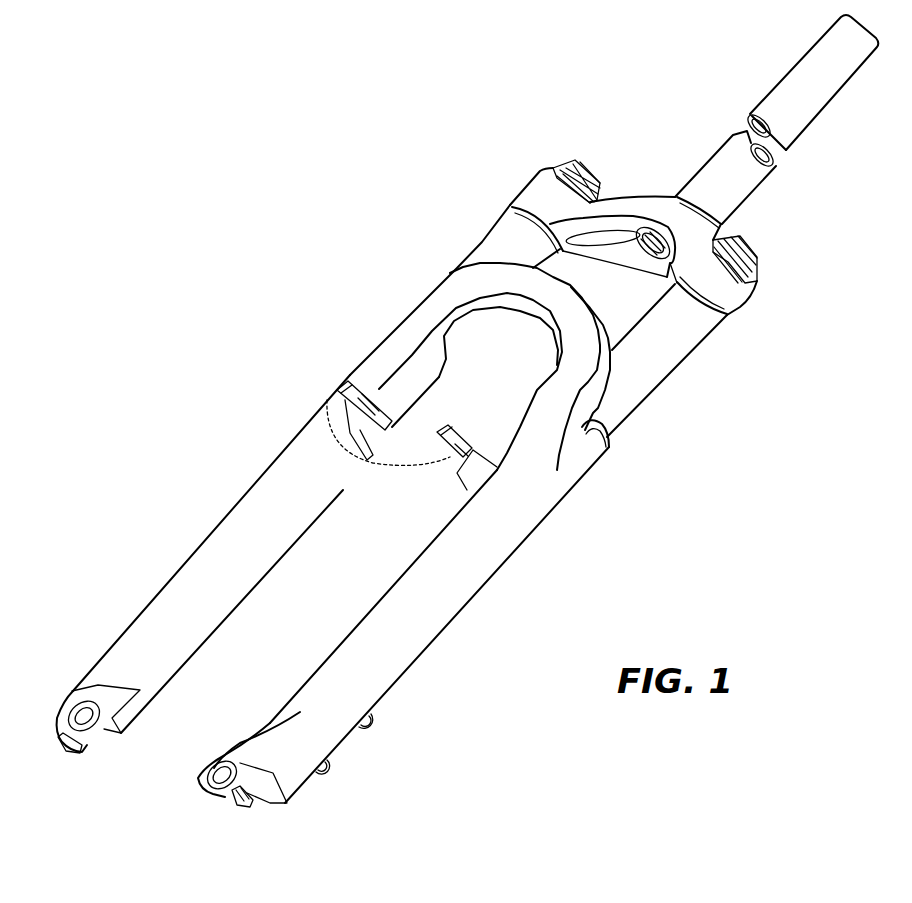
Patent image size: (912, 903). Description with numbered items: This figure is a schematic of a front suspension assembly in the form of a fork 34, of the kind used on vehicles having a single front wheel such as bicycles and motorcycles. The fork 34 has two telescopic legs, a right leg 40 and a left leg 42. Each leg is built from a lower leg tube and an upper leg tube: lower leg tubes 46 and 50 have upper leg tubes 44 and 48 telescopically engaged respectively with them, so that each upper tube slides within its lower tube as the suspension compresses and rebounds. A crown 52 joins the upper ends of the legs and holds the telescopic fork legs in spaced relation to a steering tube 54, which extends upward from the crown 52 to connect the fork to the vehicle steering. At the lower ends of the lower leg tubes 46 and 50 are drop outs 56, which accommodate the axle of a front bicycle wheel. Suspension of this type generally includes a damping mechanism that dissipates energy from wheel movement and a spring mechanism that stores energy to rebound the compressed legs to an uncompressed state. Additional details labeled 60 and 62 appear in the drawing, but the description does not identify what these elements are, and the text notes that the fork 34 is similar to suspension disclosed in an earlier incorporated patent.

The fork 34 is at (672, 68).
The right leg 40 is at (256, 400).
The left leg 42 is at (631, 498).
The upper leg tube 44 is at (482, 242).
The lower leg tube 46 is at (157, 595).
The upper leg tube 48 is at (700, 347).
The lower leg tube 50 is at (473, 600).
The crown 52 is at (613, 195).
The steering tube 54 is at (760, 180).
The drop outs 56 is at (60, 718).
The fastener / brake mount 60 is at (327, 407).
The mounting bosses 62 is at (368, 725).